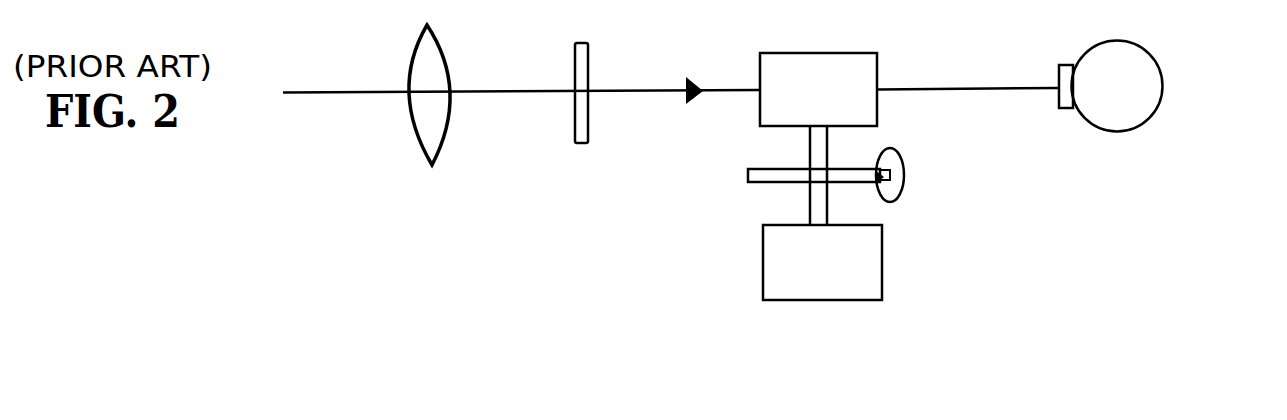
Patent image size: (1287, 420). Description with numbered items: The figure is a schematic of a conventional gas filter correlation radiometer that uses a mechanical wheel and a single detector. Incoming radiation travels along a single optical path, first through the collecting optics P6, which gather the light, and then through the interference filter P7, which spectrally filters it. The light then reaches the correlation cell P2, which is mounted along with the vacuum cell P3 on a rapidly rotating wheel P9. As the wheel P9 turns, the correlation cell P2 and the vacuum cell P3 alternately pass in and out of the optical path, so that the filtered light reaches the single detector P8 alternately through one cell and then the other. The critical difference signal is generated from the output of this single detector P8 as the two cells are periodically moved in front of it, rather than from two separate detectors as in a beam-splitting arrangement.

The correlation cell P2 is at (863, 52).
The vacuum cell P3 is at (882, 270).
The collecting optics P6 is at (425, 150).
The interference filter P7 is at (590, 67).
The single detector P8 is at (1163, 90).
The rotating wheel P9 is at (748, 172).